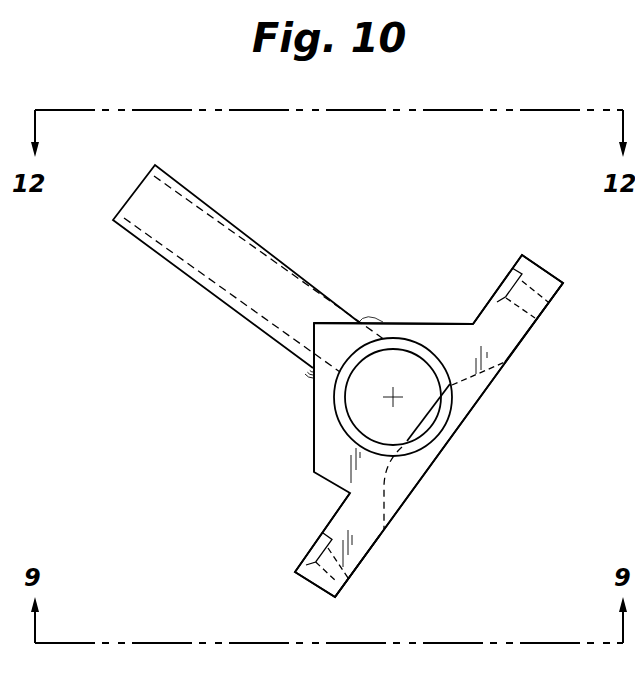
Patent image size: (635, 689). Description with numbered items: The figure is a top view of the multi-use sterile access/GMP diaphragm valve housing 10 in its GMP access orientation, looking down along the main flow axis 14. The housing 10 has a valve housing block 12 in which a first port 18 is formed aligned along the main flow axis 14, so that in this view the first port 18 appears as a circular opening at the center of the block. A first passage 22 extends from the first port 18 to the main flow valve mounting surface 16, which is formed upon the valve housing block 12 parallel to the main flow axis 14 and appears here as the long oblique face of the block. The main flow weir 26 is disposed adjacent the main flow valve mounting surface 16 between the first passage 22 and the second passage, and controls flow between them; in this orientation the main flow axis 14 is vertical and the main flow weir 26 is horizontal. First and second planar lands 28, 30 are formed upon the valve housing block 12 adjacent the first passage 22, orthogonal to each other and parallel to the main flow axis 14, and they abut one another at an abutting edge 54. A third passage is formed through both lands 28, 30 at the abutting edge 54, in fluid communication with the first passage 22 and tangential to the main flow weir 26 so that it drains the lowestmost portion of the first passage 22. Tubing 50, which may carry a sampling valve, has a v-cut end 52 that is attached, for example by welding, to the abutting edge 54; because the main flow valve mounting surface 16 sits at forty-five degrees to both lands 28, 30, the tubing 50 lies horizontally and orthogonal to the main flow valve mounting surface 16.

The diaphragm valve housing 10 is at (451, 203).
The valve housing block 12 is at (541, 267).
The main flow axis 14 is at (393, 398).
The main flow valve mounting surface 16 is at (368, 553).
The first port 18 is at (384, 429).
The first passage 22 is at (461, 391).
The main flow weir 26 is at (450, 440).
The first planar land 28 is at (434, 323).
The second planar land 30 is at (315, 436).
The tubing 50 is at (170, 265).
The end of the tubing 52 is at (313, 332).
The abutting edge 54 is at (308, 316).